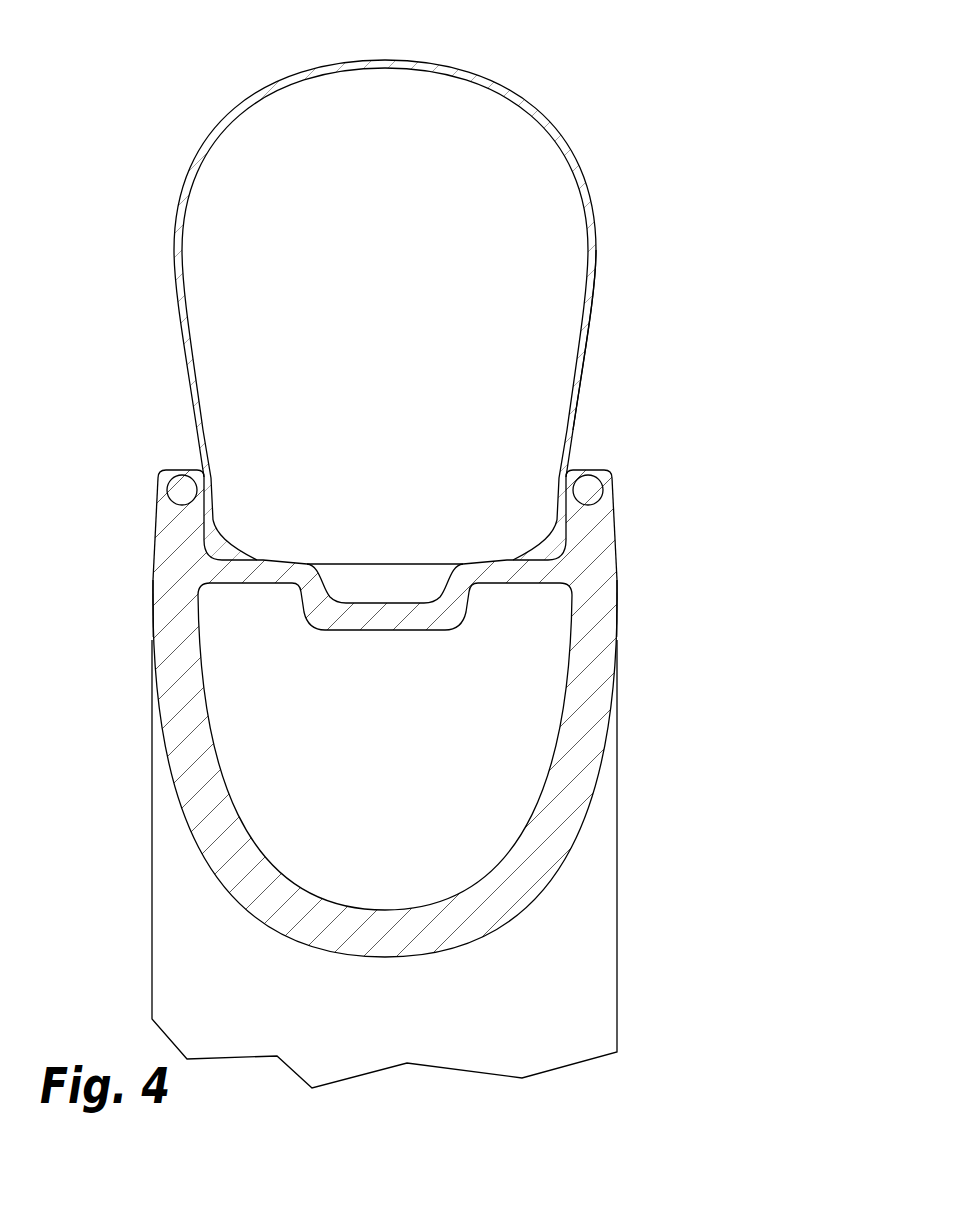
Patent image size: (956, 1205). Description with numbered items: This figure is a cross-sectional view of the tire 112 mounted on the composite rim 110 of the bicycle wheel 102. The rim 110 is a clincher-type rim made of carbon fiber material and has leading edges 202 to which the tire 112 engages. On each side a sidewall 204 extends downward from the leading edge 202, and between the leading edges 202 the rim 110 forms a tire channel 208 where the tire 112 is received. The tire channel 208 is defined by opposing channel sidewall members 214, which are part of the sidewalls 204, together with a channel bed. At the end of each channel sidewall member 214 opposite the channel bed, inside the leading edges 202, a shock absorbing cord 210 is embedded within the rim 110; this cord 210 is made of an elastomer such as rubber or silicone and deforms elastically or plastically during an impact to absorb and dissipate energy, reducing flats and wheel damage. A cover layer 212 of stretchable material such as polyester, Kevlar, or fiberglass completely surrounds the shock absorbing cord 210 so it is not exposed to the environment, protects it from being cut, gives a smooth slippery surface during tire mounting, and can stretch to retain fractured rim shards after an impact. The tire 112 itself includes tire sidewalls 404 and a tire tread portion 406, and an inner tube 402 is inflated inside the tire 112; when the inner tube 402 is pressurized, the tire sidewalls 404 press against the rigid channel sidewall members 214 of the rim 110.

The wheel 102 is at (570, 119).
The tire tread portion 406 is at (208, 138).
The tire sidewalls 404 is at (183, 345).
The tire 112 is at (592, 258).
The inner tube 402 is at (253, 548).
The cover layer 212 is at (180, 468).
The shock absorbing cord 210 is at (176, 493).
The leading edges 202 is at (153, 530).
The channel sidewall members 214 is at (153, 565).
The sidewall 204 is at (192, 790).
The tire channel 208 is at (376, 542).
The rim 110 is at (594, 548).